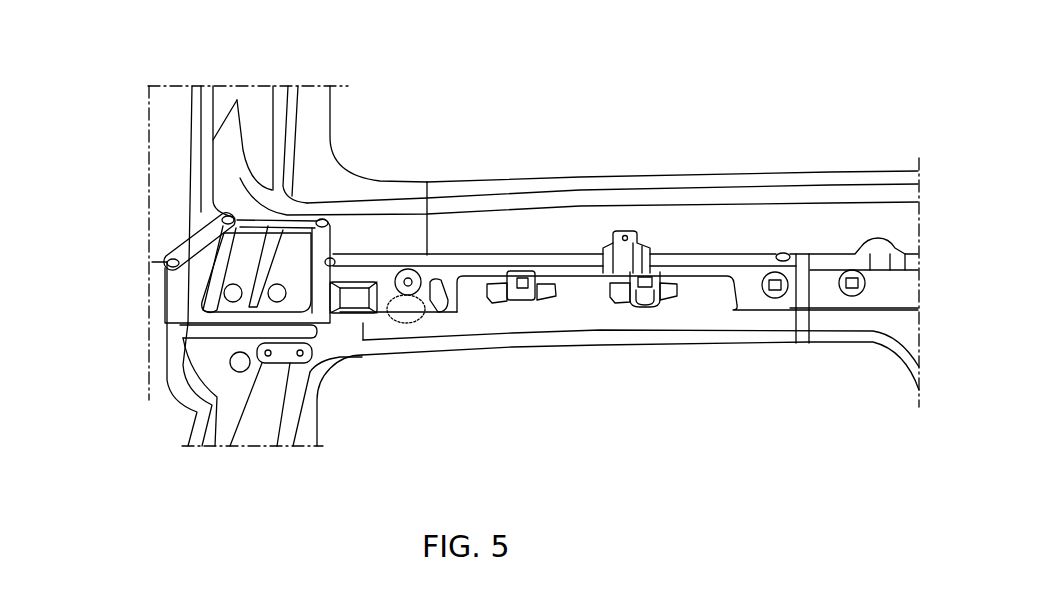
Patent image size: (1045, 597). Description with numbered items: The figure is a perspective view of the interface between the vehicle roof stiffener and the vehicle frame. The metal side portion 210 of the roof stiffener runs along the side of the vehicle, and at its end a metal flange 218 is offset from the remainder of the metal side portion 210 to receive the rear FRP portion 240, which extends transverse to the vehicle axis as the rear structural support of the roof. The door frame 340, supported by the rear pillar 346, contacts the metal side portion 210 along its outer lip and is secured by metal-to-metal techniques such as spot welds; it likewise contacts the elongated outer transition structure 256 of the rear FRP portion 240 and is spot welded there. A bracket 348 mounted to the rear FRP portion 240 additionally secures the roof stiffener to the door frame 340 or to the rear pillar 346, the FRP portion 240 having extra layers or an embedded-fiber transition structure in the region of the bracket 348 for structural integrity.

The metal side portion 210 is at (800, 208).
The metal flange 218 is at (436, 182).
The rear FRP portion 240 is at (240, 92).
The elongated outer transition structure 256 is at (152, 262).
The door frame 340 is at (512, 347).
The rear pillar 346 is at (317, 420).
The bracket 348 is at (190, 283).